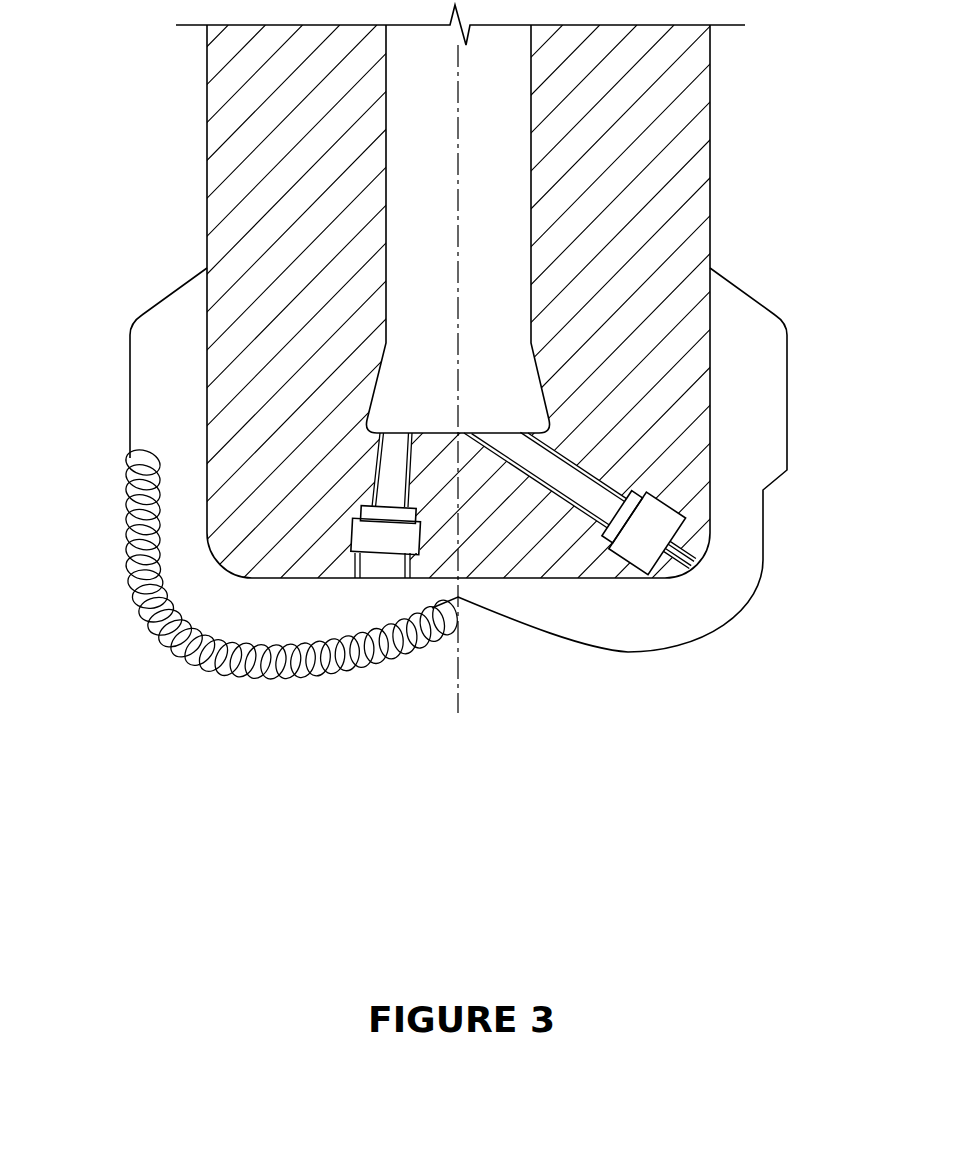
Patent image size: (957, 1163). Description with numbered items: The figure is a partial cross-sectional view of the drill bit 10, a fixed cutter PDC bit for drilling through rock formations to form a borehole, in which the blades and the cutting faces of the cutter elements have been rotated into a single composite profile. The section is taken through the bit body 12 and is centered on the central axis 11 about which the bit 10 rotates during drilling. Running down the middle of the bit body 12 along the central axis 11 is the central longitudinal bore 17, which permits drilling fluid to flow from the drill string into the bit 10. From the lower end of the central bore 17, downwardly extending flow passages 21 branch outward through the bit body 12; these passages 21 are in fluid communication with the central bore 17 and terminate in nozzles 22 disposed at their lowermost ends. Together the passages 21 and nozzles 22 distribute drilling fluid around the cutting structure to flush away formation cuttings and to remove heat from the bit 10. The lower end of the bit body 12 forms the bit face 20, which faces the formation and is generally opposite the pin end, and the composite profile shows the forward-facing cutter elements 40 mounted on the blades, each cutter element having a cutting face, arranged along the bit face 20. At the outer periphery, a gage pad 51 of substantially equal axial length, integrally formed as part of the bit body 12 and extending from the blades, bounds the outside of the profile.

The drill bit 10 is at (768, 207).
The central axis 11 is at (460, 115).
The bit body 12 is at (113, 365).
The central longitudinal bore 17 is at (508, 229).
The bit face 20 is at (207, 662).
The flow passages 21 is at (395, 467).
The nozzles 22 is at (381, 540).
The cutter elements 40 is at (165, 641).
The gage pads 51 is at (789, 388).